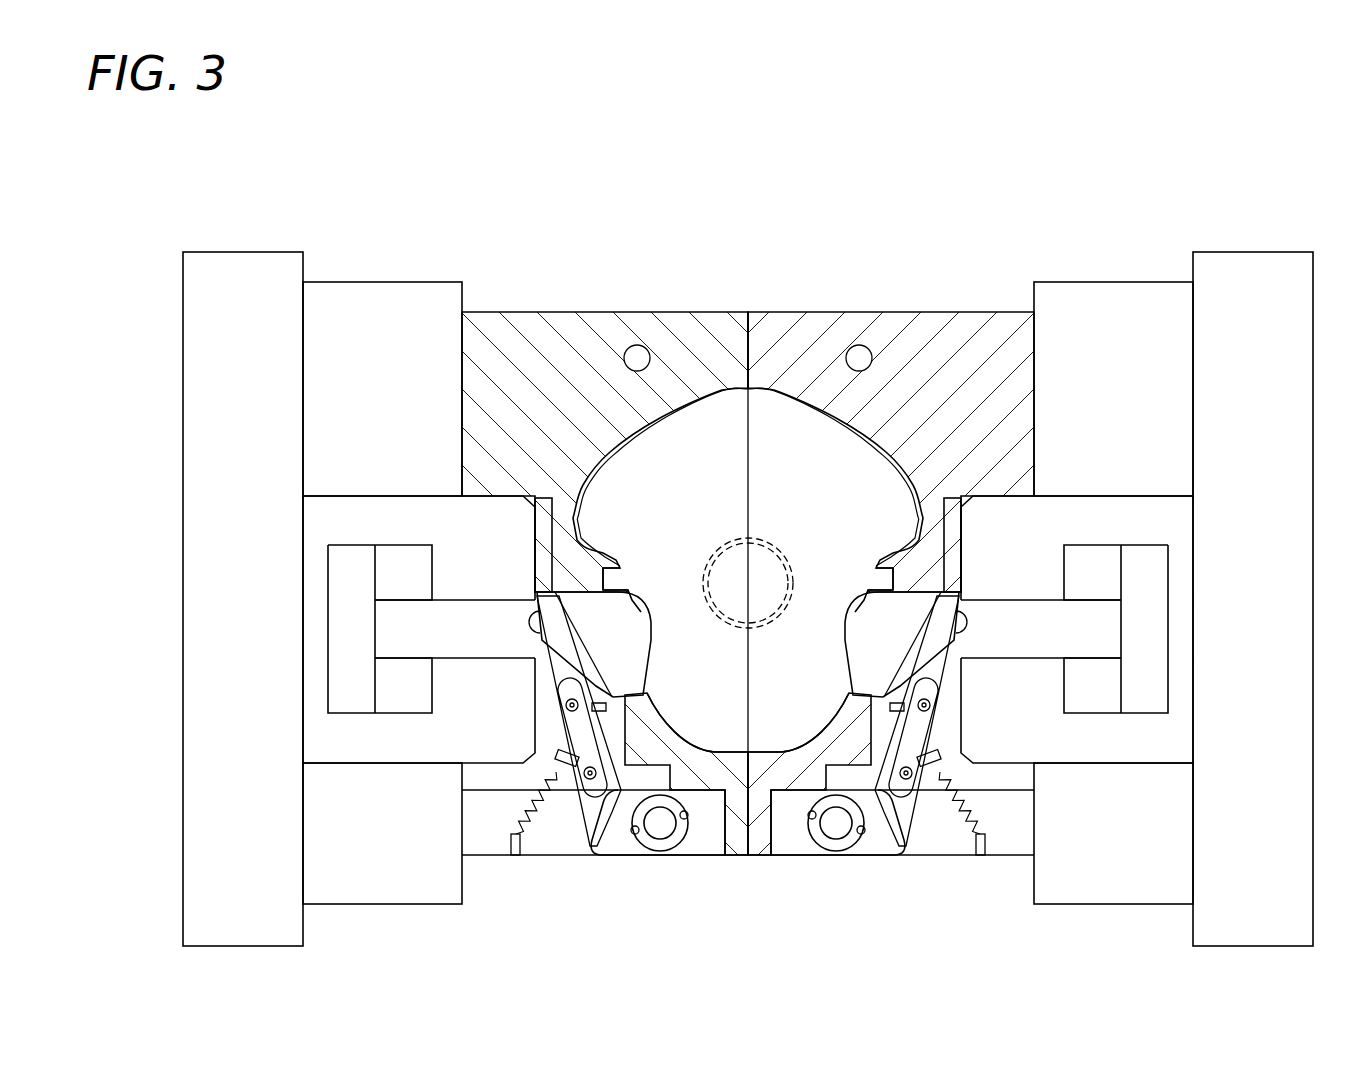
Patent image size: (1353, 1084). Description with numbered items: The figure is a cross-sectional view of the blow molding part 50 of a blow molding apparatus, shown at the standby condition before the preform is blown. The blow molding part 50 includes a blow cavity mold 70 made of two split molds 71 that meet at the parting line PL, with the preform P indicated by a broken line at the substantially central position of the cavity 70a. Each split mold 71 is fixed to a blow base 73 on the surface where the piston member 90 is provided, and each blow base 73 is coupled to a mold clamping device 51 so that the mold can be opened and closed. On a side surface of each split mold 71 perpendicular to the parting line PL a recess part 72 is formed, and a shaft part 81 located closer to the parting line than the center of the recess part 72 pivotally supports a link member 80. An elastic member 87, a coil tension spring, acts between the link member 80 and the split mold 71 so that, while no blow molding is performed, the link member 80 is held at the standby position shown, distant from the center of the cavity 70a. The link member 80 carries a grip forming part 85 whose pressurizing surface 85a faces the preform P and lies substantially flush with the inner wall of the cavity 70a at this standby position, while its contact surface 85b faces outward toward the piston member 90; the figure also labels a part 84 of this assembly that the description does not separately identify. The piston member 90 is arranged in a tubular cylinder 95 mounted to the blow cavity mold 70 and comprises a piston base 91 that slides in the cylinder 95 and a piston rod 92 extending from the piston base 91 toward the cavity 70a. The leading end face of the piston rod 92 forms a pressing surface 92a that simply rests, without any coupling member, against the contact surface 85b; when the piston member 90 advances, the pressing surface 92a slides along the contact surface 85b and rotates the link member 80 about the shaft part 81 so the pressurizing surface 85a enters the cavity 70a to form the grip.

The blow molding part 50 is at (1168, 182).
The mold clamping device 51 is at (235, 277).
The blow cavity mold 70 is at (952, 260).
The cavity 70a is at (787, 578).
The split mold 71 is at (1013, 355).
The recess part 72 is at (477, 832).
The blow base 73 is at (370, 306).
The link member 80 is at (910, 827).
The shaft part 81 is at (840, 827).
The holding claw 84 is at (850, 675).
The grip forming part 85 is at (893, 550).
The pressurizing surface 85a is at (850, 650).
The contact surface 85b is at (962, 633).
The elastic member 87 is at (980, 810).
The piston member 90 is at (1095, 597).
The piston base 91 is at (1145, 702).
The piston rod 92 is at (1047, 640).
The pressing surface 92a is at (920, 590).
The cylinder 95 is at (1050, 565).
The preform P is at (696, 582).
The parting line PL is at (752, 353).